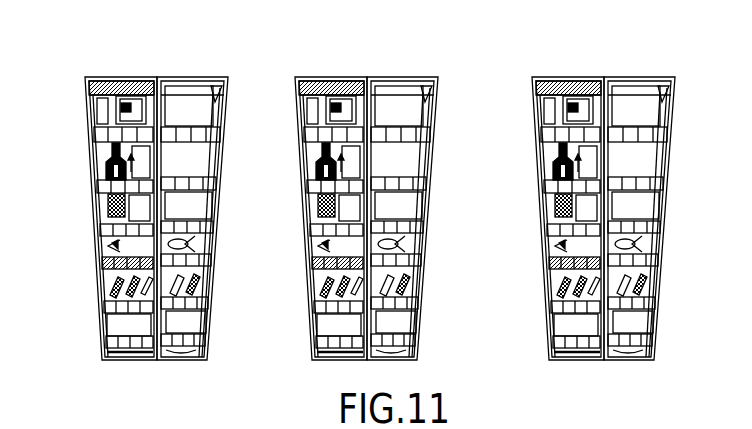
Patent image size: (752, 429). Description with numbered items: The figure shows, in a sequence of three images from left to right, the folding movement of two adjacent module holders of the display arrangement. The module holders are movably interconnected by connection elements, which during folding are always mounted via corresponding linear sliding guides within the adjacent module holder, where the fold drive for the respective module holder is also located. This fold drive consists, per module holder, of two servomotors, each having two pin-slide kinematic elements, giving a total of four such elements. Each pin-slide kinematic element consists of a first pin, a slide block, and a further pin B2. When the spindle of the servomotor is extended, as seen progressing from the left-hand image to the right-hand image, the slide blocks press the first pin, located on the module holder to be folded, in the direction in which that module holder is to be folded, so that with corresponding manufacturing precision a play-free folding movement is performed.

The pin B2 is at (529, 92).